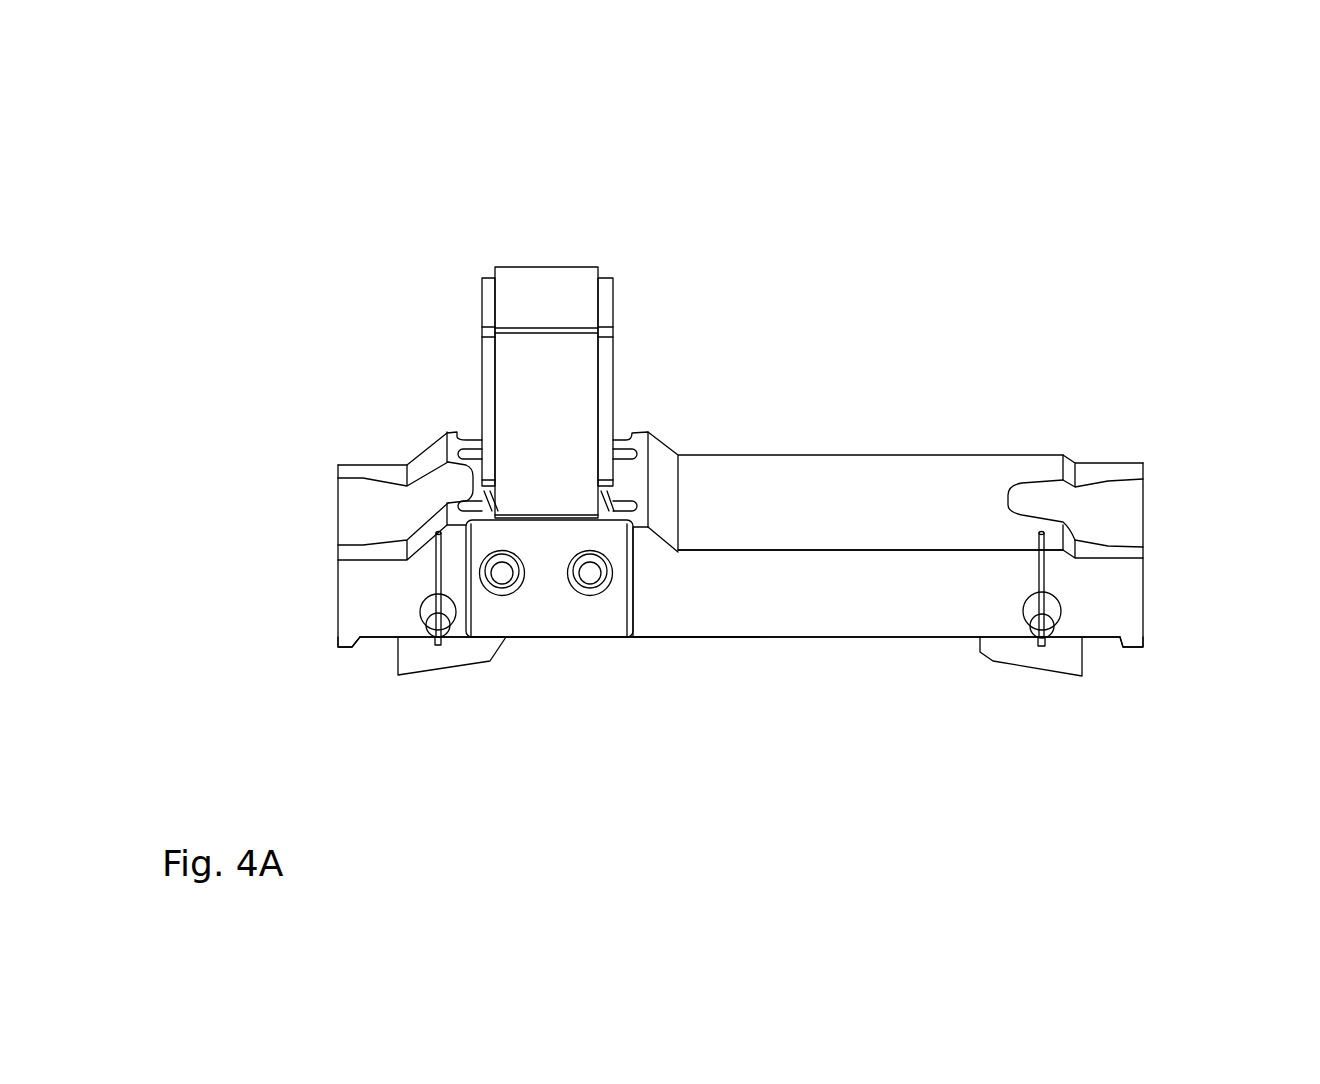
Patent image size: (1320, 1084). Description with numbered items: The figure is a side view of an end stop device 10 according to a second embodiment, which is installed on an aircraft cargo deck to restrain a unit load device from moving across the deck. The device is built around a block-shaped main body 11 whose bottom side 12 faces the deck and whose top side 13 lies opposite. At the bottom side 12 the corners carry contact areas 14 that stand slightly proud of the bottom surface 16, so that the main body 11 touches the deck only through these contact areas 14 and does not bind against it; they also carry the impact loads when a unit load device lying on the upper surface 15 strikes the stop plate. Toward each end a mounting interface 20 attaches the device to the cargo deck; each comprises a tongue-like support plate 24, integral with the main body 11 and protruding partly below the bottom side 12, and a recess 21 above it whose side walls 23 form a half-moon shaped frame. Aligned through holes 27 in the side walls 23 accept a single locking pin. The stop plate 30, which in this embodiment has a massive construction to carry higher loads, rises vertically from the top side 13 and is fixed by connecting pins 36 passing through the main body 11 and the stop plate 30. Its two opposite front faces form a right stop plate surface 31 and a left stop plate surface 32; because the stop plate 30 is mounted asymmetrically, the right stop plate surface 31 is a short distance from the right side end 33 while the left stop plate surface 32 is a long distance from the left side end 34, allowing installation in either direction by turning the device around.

The end stop device 10 is at (403, 180).
The main body 11 is at (916, 622).
The bottom side 12 is at (835, 655).
The top side 13 is at (833, 485).
The contact areas 14 is at (348, 650).
The upper surface 15 is at (917, 477).
The bottom surface 16 is at (715, 640).
The mounting interfaces 20 is at (338, 418).
The recess 21 is at (1108, 508).
The side walls 23 is at (362, 507).
The support plate 24 is at (408, 676).
The through holes 27 is at (438, 632).
The stop plate 30 is at (543, 282).
The right stop plate surface 31 is at (470, 300).
The left stop plate surface 32 is at (625, 300).
The right side end 33 is at (313, 557).
The left side end 34 is at (1182, 576).
The connecting pins 36 is at (588, 582).